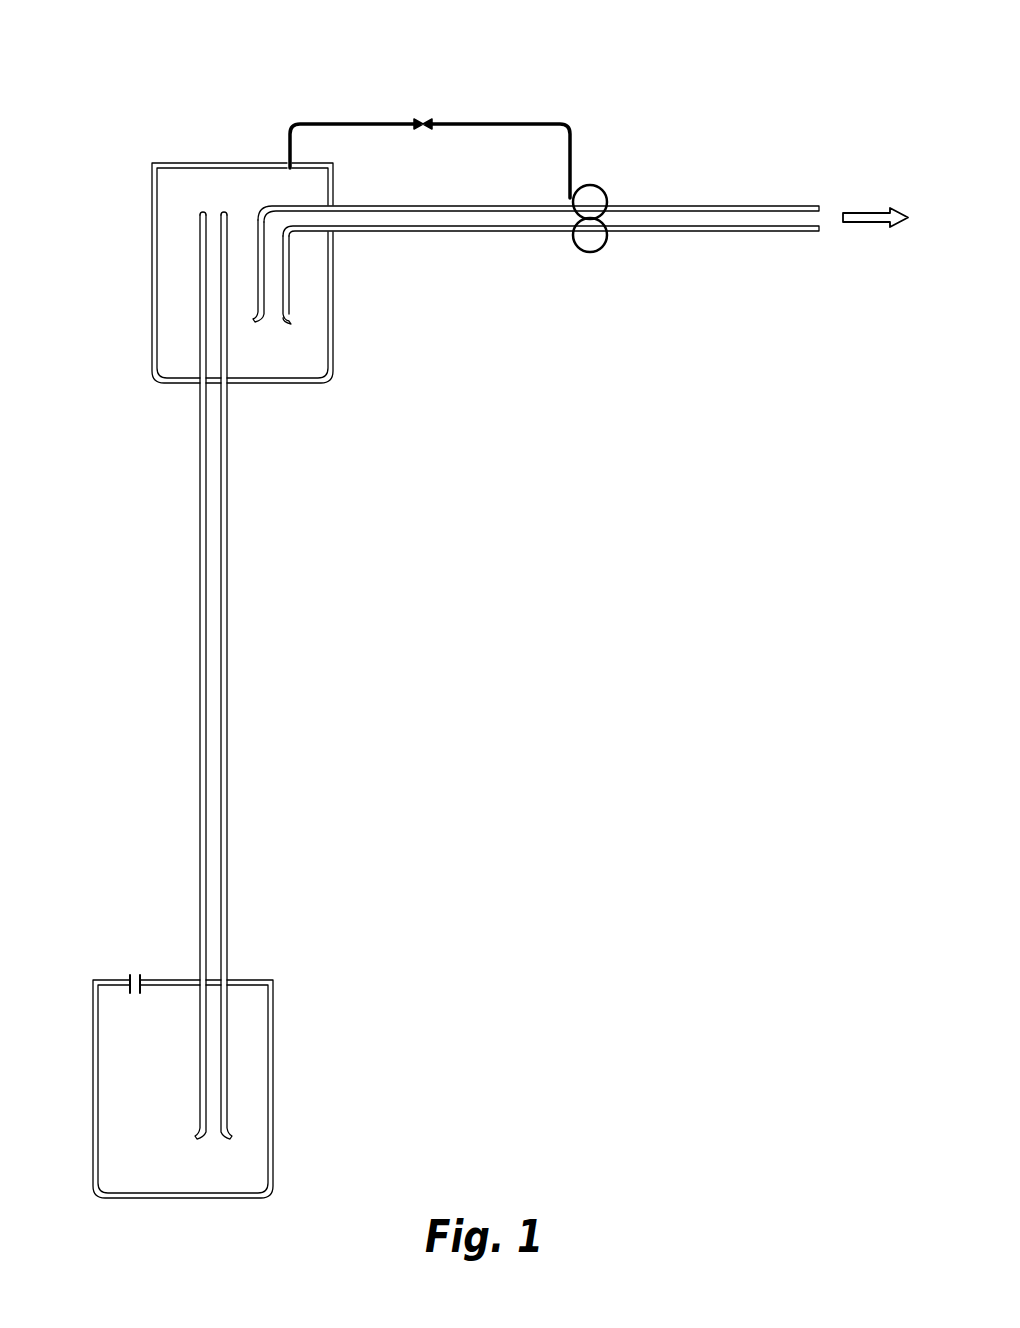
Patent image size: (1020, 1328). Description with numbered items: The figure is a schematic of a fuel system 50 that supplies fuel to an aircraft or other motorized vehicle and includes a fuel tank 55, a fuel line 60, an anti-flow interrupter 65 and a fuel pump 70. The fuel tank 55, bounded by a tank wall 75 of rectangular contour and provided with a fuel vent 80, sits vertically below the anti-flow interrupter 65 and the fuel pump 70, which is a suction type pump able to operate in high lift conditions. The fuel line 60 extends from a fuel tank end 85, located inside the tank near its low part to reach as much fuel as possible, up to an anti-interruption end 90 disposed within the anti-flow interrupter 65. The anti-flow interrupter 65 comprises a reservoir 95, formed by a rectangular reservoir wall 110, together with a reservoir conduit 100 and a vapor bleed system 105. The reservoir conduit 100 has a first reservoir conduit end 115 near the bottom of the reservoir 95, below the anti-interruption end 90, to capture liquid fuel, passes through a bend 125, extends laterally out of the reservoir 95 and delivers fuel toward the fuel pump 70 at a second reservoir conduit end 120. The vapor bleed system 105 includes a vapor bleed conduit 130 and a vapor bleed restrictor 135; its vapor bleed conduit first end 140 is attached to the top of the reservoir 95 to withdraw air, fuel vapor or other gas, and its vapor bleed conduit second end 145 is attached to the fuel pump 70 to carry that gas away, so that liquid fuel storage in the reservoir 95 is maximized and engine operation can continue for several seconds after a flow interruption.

The fuel system 50 is at (550, 723).
The fuel tank 55 is at (318, 982).
The fuel line 60 is at (228, 858).
The anti-flow interrupter 65 is at (167, 118).
The fuel pump 70 is at (608, 195).
The tank wall 75 is at (273, 1060).
The fuel vent 80 is at (129, 977).
The fuel tank end 85 is at (232, 1125).
The anti-interruption end 90 is at (198, 217).
The reservoir 95 is at (133, 383).
The reservoir conduit 100 is at (289, 277).
The vapor bleed system 105 is at (527, 66).
The reservoir wall 110 is at (333, 362).
The first reservoir conduit end 115 is at (258, 322).
The second reservoir conduit end 120 is at (572, 232).
The bend 125 is at (289, 245).
The vapor bleed conduit 130 is at (312, 120).
The vapor bleed restrictor 135 is at (423, 117).
The vapor bleed conduit first end 140 is at (286, 162).
The vapor bleed conduit second end 145 is at (574, 194).